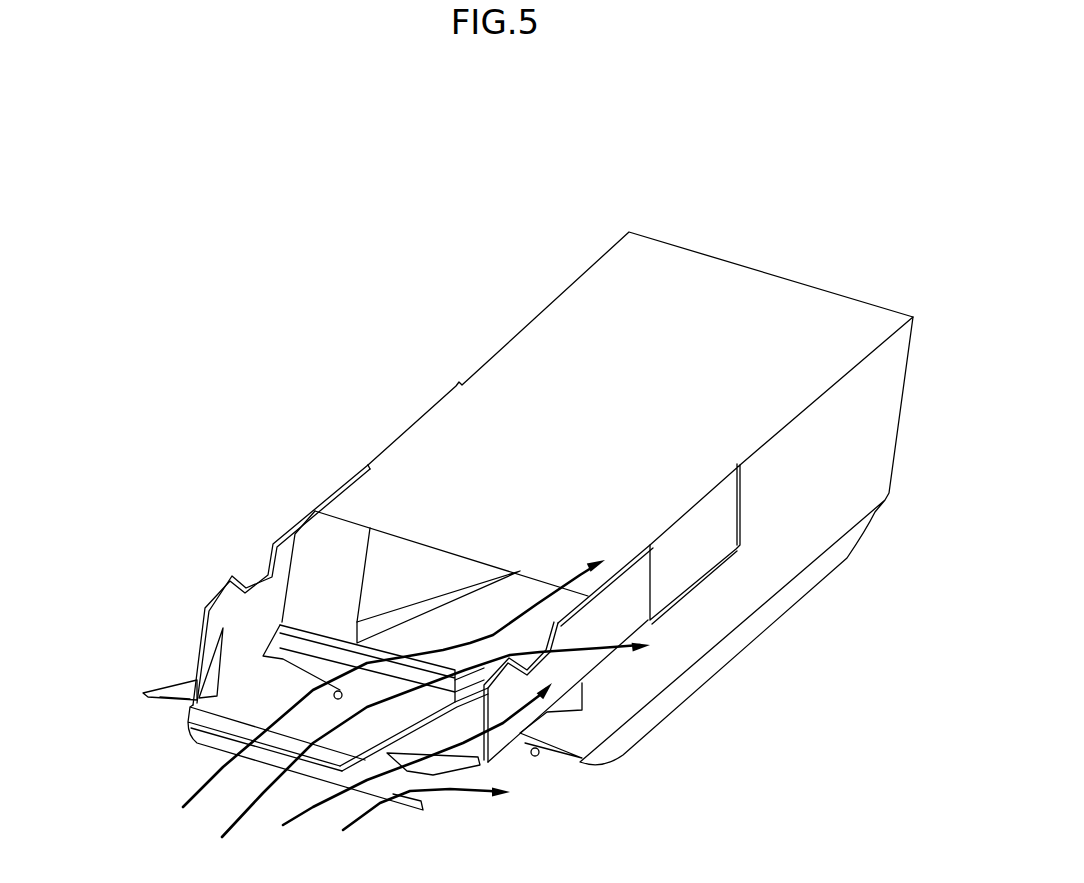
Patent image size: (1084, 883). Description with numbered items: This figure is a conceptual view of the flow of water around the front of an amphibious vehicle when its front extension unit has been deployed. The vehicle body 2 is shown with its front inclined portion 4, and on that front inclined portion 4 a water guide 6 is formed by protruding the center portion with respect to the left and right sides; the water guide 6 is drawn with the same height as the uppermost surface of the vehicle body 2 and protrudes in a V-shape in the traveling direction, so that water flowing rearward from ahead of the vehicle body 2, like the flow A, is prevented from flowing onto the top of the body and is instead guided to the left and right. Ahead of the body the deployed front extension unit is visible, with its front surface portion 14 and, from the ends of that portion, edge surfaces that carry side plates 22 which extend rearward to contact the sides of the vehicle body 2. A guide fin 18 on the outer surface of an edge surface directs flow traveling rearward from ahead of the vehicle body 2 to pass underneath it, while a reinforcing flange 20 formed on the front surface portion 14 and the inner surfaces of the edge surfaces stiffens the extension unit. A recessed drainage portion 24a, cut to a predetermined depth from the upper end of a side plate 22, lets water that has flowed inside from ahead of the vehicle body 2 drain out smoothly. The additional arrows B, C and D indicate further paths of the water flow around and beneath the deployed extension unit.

The vehicle body 2 is at (586, 320).
The front inclined portion 4 is at (322, 555).
The water guide 6 is at (403, 567).
The front surface portion 14 is at (226, 743).
The guide fin 18 is at (170, 690).
The reinforcing flange 20 is at (212, 660).
The side plate 22 is at (580, 663).
The recessed drainage portion 24a is at (252, 573).
The flow A is at (385, 691).
The airflow B is at (427, 751).
The airflow C is at (408, 766).
The airflow D is at (416, 823).